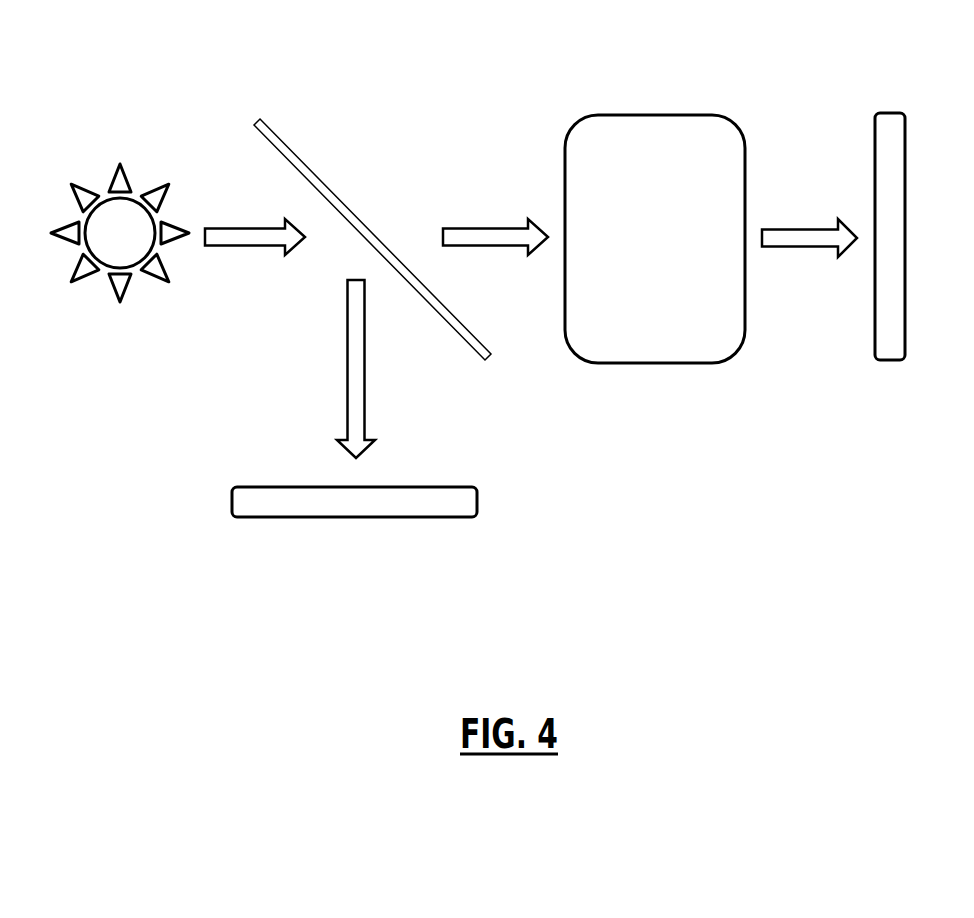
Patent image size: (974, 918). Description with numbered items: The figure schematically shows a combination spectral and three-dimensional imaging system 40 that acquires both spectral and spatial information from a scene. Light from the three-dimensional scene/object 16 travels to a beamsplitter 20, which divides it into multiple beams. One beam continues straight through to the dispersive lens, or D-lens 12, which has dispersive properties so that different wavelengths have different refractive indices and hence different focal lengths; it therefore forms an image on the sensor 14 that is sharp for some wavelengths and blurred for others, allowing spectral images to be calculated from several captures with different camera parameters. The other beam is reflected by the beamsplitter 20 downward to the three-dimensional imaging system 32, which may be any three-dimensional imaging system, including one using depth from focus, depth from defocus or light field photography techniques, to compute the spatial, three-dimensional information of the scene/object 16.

The combination spectral and 3-D imaging system 40 is at (635, 50).
The scene/object 16 is at (147, 172).
The beamsplitter 20 is at (383, 203).
The D-lens 12 is at (702, 103).
The sensor 14 is at (900, 93).
The 3-D imaging system 32 is at (438, 468).